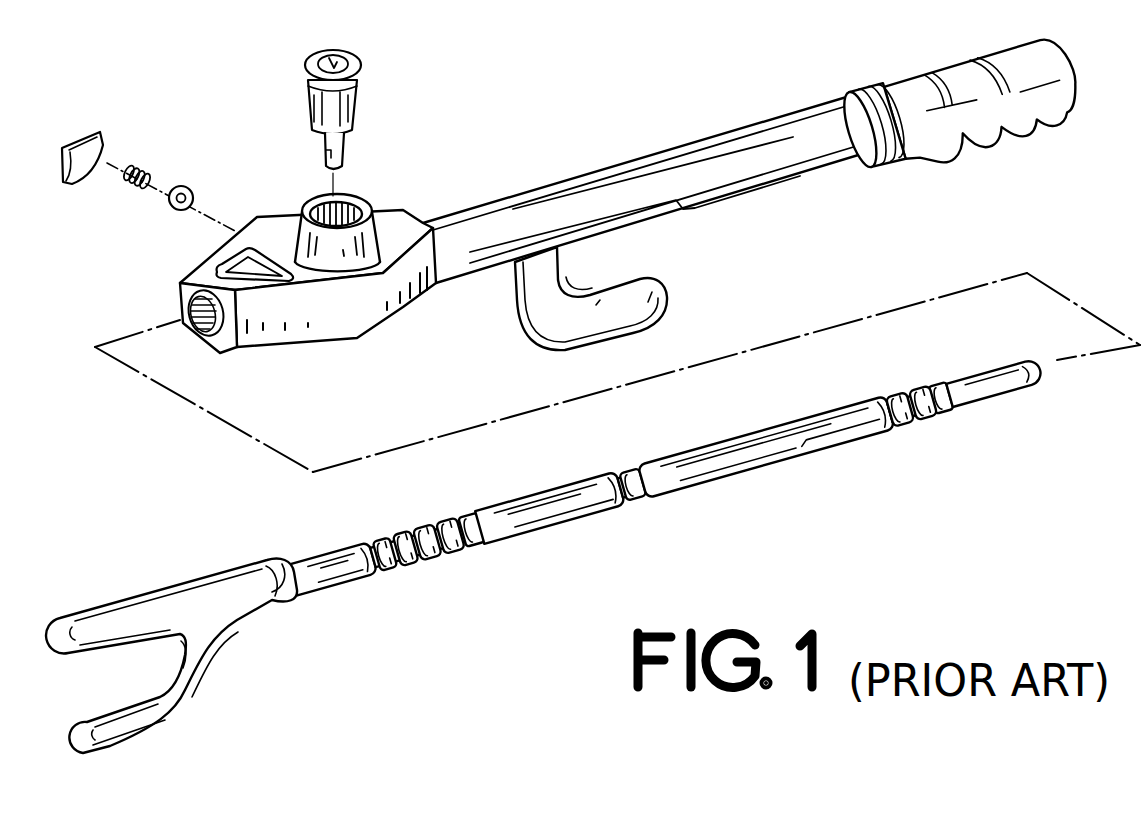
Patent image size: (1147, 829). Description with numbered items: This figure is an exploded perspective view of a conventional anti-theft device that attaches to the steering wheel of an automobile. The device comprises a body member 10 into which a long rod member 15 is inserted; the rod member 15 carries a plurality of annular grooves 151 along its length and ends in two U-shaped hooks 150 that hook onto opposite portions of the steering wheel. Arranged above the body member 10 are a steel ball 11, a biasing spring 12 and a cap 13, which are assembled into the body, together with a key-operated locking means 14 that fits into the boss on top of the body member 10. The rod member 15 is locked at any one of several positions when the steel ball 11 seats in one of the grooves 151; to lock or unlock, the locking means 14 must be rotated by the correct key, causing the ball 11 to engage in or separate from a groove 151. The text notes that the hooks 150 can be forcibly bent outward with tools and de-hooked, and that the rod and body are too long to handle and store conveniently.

The body member 10 is at (650, 150).
The steel ball 11 is at (190, 192).
The biasing spring 12 is at (150, 163).
The cap 13 is at (107, 140).
The locking means 14 is at (360, 100).
The rod member 15 is at (557, 527).
The U-shaped hooks 150 is at (140, 730).
The annular grooves 151 is at (422, 557).